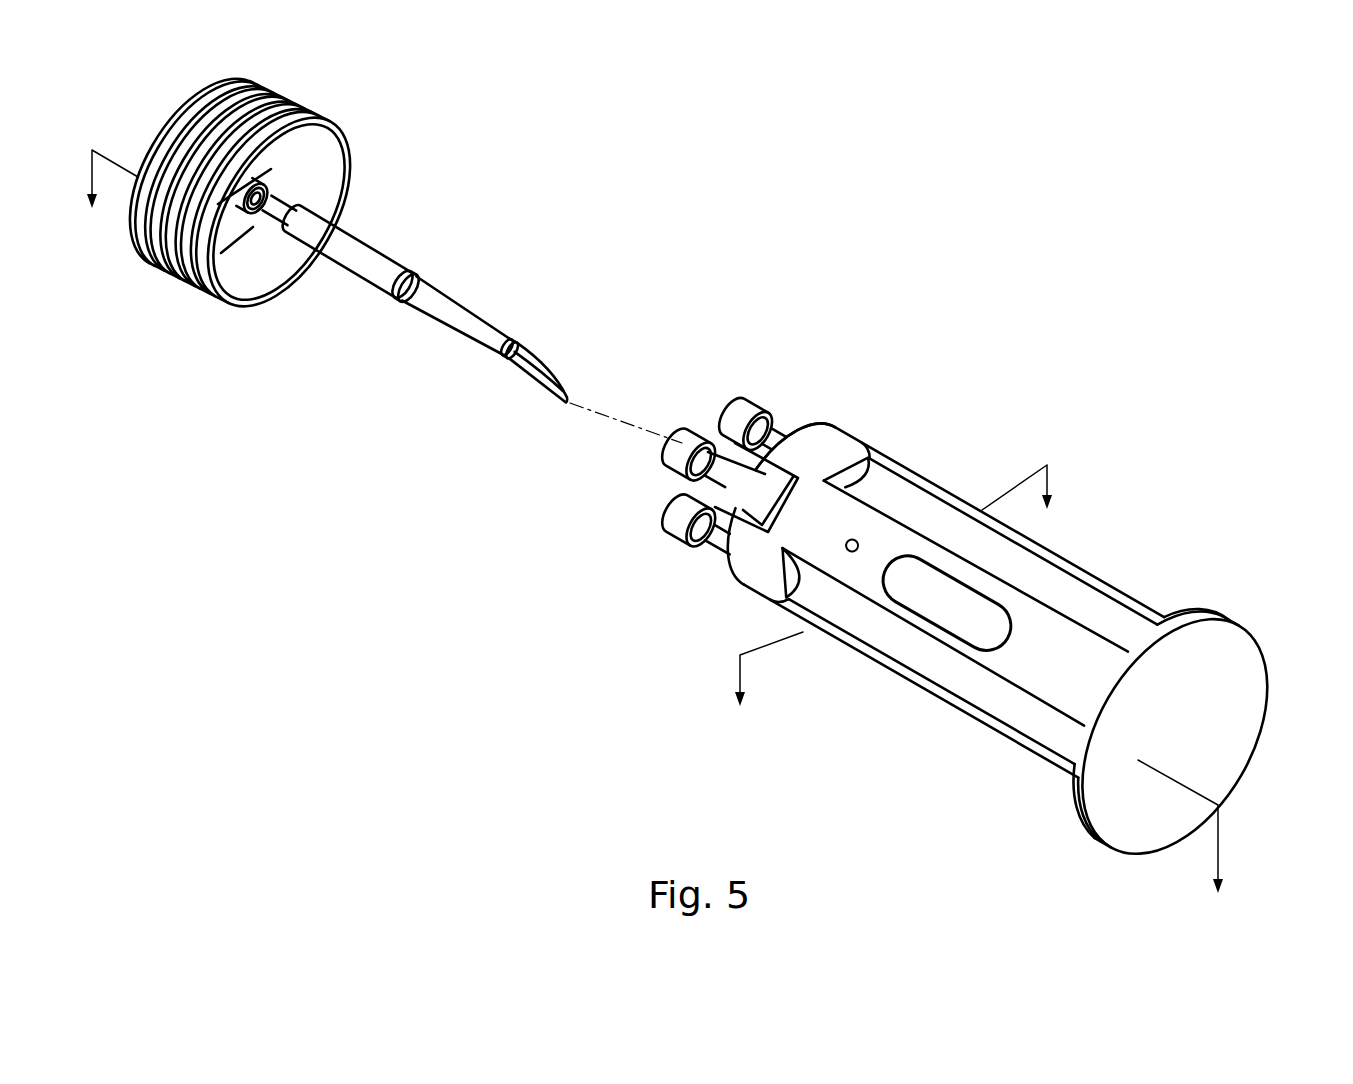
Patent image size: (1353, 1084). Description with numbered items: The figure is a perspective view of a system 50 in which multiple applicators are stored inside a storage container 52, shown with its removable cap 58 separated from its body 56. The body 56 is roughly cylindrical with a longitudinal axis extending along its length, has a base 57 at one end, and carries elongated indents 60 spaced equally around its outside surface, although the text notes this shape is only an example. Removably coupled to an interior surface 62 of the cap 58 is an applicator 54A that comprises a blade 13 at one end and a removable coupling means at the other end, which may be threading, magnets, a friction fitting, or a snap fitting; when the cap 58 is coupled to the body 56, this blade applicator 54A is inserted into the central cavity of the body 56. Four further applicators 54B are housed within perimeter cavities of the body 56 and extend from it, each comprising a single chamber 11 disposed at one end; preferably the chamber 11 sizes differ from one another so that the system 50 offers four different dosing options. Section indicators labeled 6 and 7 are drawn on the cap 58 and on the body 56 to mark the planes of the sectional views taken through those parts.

The system 50 is at (748, 162).
The storage container 52 is at (1046, 393).
The applicator 54A is at (492, 311).
The applicators 54B is at (778, 437).
The body 56 is at (836, 448).
The base 57 is at (1243, 648).
The removable cap 58 is at (327, 121).
The elongated indents 60 is at (918, 496).
The interior surface 62 is at (268, 167).
The blade 13 is at (546, 355).
The chamber 11 is at (747, 396).
The section line 6- 6 is at (653, 537).
The section line 7- 7 is at (894, 601).